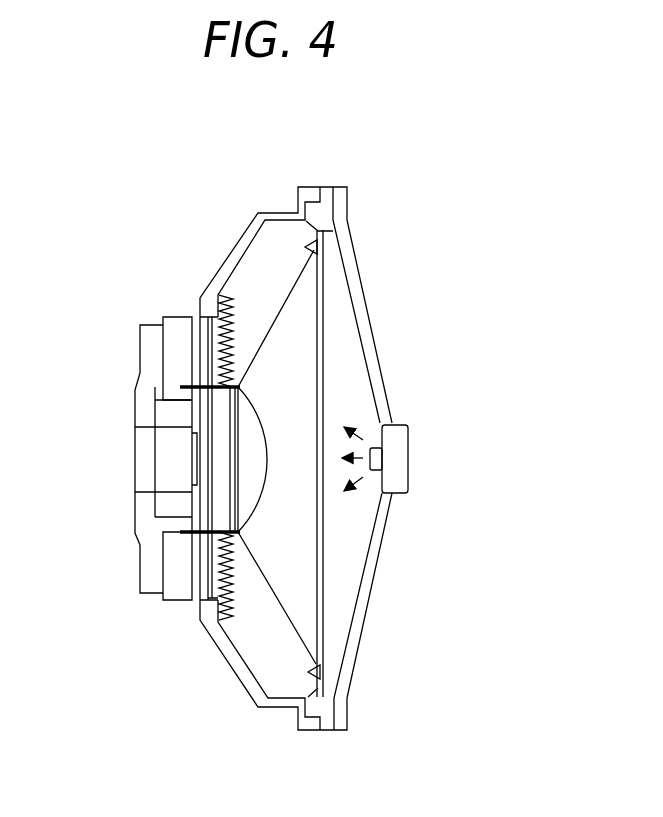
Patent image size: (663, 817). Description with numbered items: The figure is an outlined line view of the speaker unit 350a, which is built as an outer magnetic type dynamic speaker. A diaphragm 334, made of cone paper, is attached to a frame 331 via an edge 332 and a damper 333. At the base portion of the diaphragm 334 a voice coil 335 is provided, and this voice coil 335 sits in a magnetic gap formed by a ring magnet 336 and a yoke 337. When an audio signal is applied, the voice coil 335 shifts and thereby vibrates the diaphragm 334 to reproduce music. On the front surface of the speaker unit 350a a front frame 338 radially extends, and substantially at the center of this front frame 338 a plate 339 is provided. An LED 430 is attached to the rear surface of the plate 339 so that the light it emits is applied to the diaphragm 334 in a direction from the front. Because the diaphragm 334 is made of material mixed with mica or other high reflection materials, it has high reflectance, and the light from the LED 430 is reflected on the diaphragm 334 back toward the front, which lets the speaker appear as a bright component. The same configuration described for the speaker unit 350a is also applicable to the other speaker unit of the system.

The speaker unit 350a is at (283, 106).
The frame 331 is at (242, 242).
The edge 332 is at (333, 232).
The damper 333 is at (233, 593).
The diaphragm 334 is at (297, 630).
The voice coil 335 is at (190, 387).
The ring magnet 336 is at (173, 603).
The yoke 337 is at (133, 505).
The front frame 338 is at (378, 350).
The plate 339 is at (408, 435).
The LED 430 is at (374, 472).